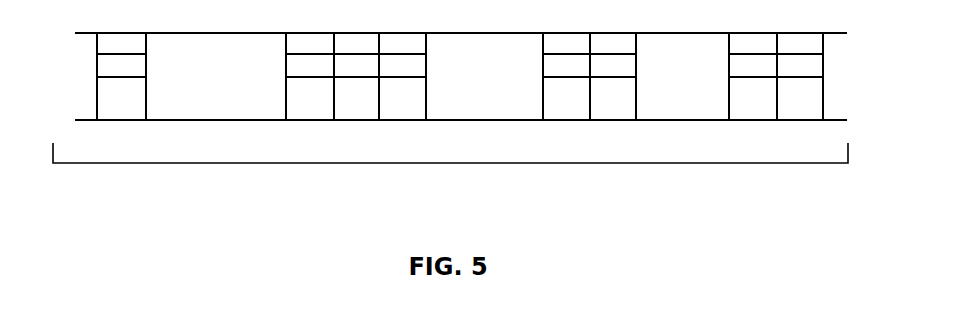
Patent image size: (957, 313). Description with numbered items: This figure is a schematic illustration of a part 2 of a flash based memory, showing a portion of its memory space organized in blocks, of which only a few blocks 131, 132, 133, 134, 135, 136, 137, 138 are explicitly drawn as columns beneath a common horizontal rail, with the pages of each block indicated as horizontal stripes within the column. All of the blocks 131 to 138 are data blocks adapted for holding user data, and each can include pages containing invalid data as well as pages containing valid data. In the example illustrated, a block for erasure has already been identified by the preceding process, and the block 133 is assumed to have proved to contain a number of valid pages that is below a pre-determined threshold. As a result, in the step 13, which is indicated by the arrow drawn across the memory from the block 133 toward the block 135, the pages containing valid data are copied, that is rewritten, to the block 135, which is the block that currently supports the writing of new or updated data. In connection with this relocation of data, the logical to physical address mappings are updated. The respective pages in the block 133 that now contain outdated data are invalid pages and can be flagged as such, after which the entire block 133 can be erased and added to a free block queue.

The part of a flash memory 2 is at (448, 163).
The step 13 is at (345, 77).
The block 131 is at (119, 100).
The block 132 is at (310, 100).
The block 133 is at (359, 100).
The block 134 is at (410, 100).
The block 135 is at (562, 100).
The block 136 is at (621, 99).
The block 137 is at (748, 100).
The block 138 is at (808, 100).